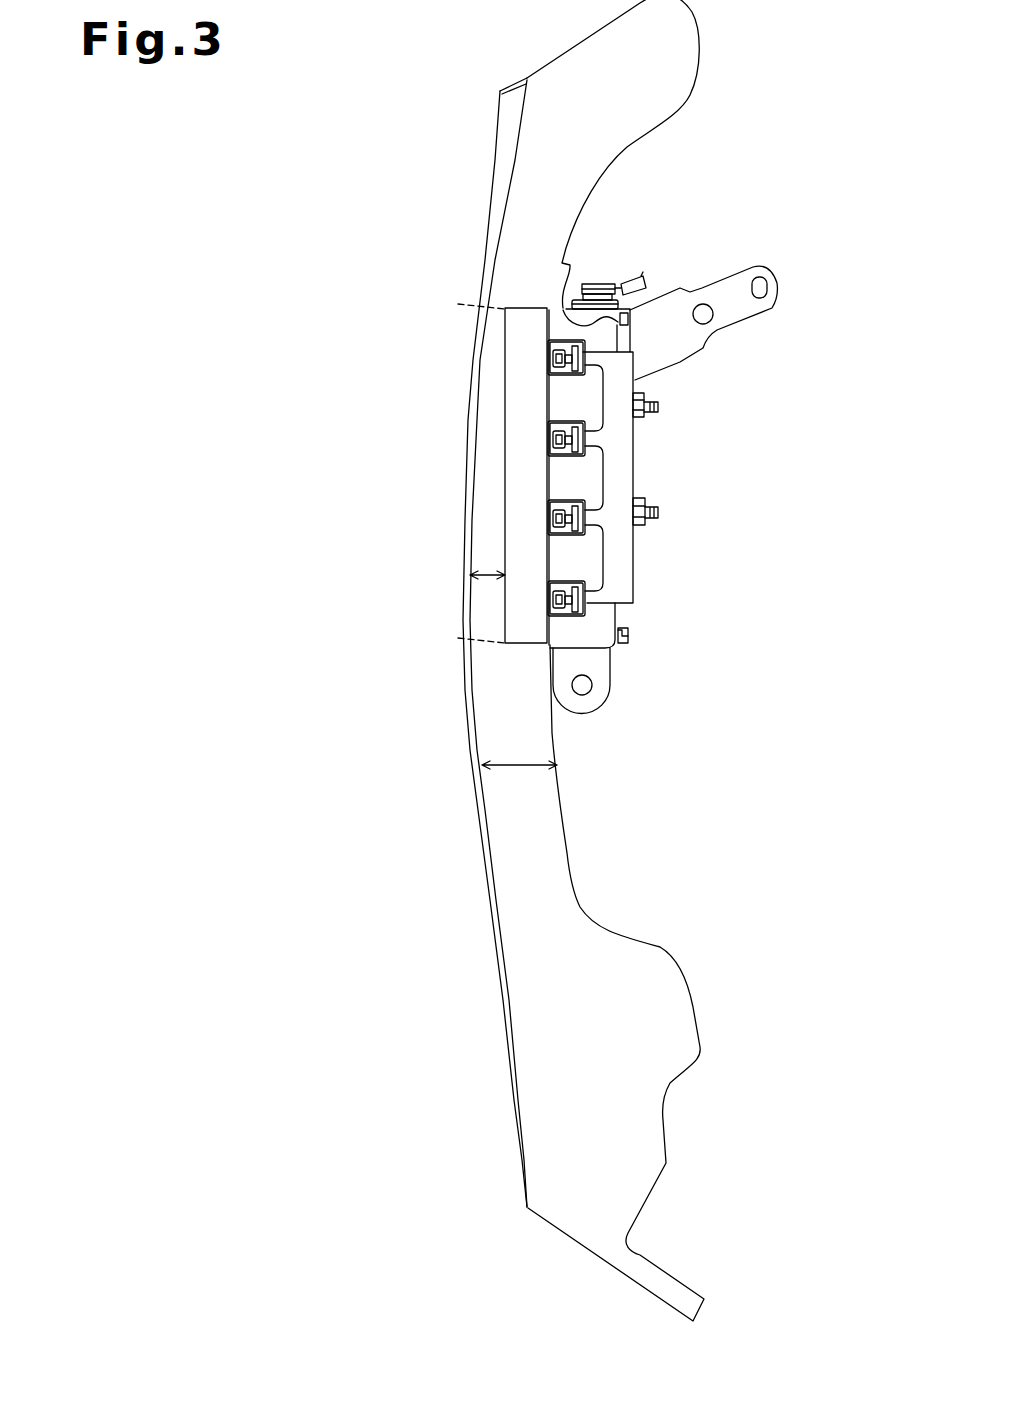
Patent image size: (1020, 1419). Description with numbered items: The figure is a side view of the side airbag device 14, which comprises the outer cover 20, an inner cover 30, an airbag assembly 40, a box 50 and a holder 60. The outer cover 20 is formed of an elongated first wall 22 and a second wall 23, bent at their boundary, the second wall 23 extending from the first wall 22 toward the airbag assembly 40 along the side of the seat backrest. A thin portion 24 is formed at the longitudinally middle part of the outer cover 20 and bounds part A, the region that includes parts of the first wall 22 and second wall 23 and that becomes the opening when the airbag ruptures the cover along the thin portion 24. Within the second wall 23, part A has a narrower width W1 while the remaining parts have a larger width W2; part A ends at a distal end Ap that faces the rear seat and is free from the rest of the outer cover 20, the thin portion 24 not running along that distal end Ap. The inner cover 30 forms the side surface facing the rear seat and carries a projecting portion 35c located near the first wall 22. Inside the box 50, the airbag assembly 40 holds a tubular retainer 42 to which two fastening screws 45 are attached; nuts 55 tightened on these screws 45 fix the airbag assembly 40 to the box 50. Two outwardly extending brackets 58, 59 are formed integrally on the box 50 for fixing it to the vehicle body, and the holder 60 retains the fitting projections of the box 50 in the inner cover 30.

The side airbag device 14 is at (335, 779).
The outer cover 20 is at (447, 643).
The first wall 22 is at (488, 230).
The second wall 23 is at (497, 262).
The thin portion 24 is at (460, 469).
The inner cover 30 is at (639, 480).
The projecting portion 35c is at (520, 645).
The airbag assembly 40 is at (633, 273).
The retainer 42 is at (597, 283).
The fastening screws 45 is at (659, 407).
The box 50 is at (628, 608).
The nuts 55 is at (637, 388).
The bracket 58 is at (763, 267).
The bracket 59 is at (600, 712).
The holder 60 is at (634, 456).
The part A is at (449, 471).
The distal end Ap is at (512, 477).
The width W1 is at (490, 574).
The width W2 is at (518, 767).